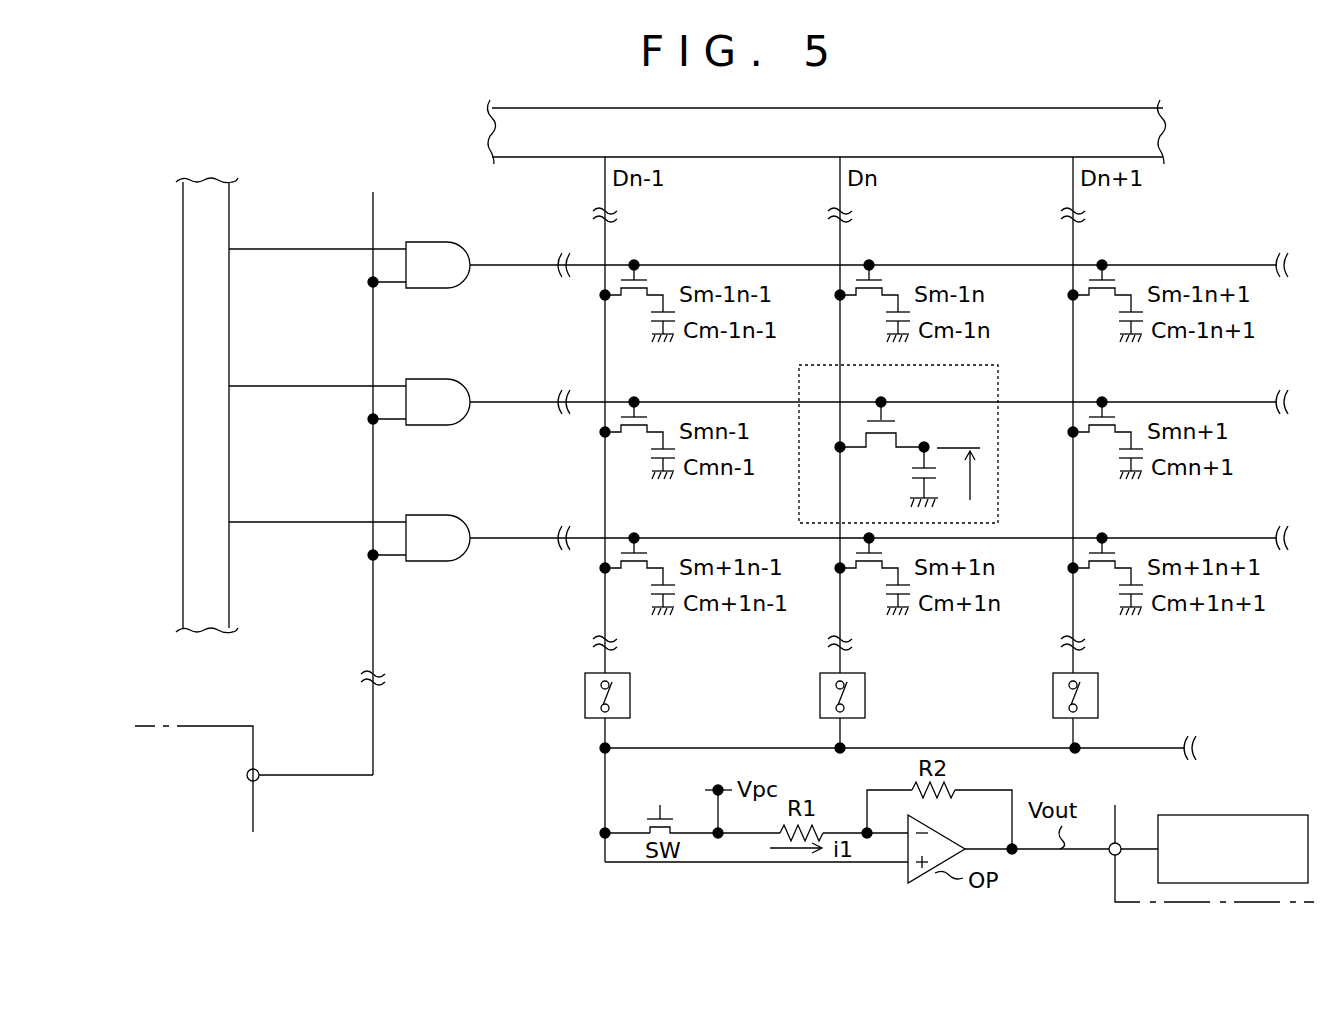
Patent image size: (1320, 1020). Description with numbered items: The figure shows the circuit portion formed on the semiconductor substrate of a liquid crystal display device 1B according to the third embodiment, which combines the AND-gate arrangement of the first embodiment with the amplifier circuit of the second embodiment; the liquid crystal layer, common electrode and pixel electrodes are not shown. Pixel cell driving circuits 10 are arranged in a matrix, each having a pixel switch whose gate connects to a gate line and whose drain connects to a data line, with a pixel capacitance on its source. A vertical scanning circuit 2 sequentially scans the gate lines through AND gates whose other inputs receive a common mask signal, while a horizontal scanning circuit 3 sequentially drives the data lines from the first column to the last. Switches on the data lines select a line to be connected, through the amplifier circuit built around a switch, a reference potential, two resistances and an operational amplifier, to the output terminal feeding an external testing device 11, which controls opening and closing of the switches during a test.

The liquid crystal display device 1B is at (300, 191).
The vertical scanning circuit 2 is at (180, 296).
The horizontal scanning circuit 3 is at (533, 158).
The pixel cell driving circuit 10 is at (1000, 495).
The testing device 11 is at (1238, 815).